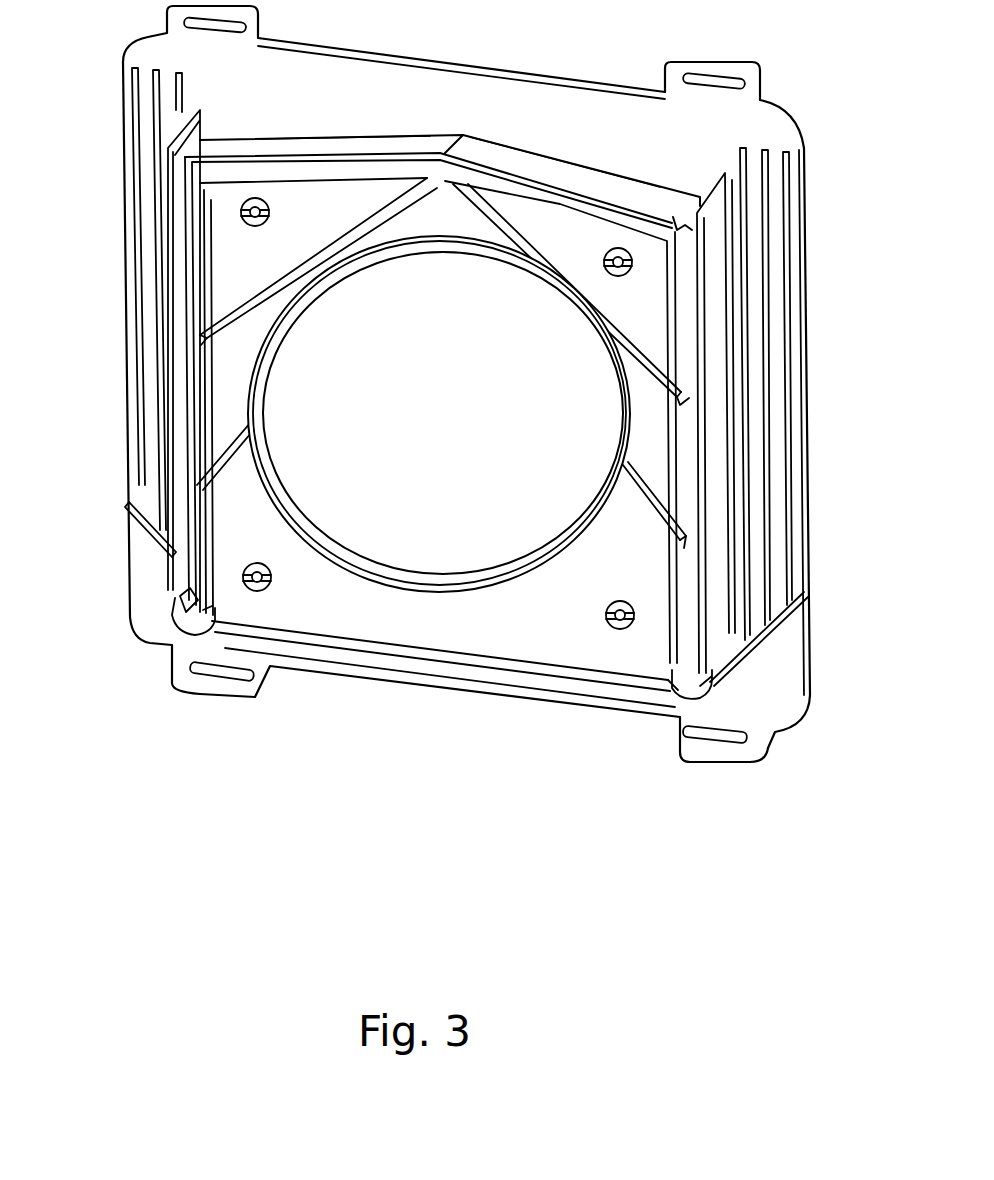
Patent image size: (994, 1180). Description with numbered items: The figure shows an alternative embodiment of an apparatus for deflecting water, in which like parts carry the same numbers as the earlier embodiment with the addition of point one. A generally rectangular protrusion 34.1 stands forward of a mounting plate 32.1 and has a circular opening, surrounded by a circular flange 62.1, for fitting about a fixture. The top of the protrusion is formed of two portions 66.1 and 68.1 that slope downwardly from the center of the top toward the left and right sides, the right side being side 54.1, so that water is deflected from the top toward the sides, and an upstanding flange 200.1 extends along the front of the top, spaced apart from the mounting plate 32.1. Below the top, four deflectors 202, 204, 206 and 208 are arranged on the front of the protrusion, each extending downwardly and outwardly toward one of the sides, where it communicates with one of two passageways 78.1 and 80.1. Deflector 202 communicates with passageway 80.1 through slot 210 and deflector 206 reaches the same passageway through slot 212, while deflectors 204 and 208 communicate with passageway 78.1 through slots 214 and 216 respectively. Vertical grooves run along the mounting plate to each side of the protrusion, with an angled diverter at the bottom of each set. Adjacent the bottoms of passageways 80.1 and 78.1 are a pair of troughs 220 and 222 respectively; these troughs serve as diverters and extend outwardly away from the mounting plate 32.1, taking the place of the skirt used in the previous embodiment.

The mounting plate 32.1 is at (787, 690).
The protrusion 34.1 is at (660, 572).
The right side 54.1 is at (715, 237).
The circular flange 62.1 is at (626, 430).
The sloping portion of top 66.1 is at (400, 140).
The sloping portion of top 68.1 is at (655, 195).
The passageway 78.1 is at (690, 353).
The passageway 80.1 is at (187, 207).
The upstanding flange 200.1 is at (507, 233).
The deflector 202 is at (353, 227).
The deflector 204 is at (520, 230).
The deflector 206 is at (237, 435).
The deflector 208 is at (657, 503).
The slot 210 is at (200, 322).
The slot 212 is at (130, 492).
The slot 214 is at (690, 388).
The slot 216 is at (672, 560).
The trough 220 is at (177, 635).
The trough 222 is at (687, 687).